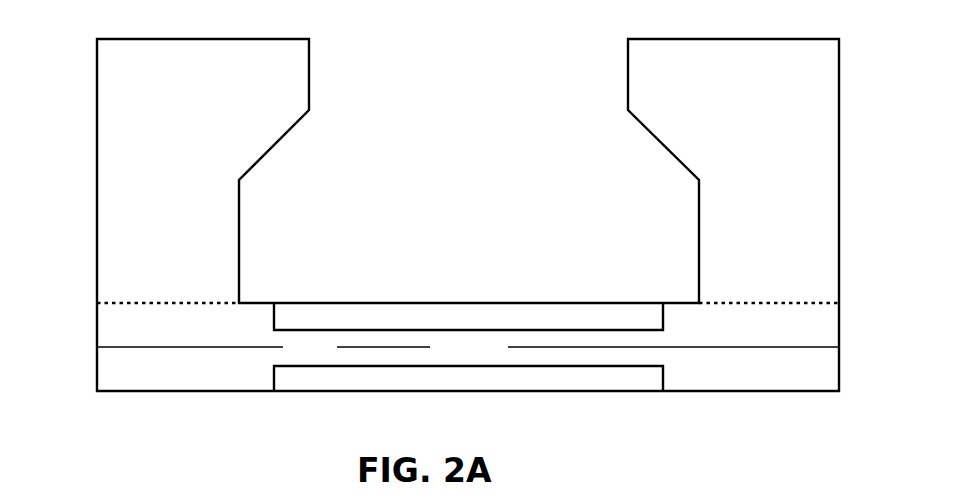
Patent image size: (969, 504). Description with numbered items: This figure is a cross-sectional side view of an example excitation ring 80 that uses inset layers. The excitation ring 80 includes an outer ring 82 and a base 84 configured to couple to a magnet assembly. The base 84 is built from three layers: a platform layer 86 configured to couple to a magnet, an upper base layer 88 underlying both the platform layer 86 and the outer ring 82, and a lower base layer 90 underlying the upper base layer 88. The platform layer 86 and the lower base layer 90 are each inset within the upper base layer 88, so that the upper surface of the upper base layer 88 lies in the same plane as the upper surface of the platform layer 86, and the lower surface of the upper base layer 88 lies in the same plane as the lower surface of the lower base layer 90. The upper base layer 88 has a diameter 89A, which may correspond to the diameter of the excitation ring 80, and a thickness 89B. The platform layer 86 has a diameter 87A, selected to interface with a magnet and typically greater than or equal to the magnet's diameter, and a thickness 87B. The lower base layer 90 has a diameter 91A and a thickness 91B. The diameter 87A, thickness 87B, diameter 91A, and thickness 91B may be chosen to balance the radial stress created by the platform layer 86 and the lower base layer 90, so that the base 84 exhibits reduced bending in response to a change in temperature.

The excitation ring 80 is at (872, 148).
The outer ring 82 is at (748, 67).
The base 84 is at (857, 303).
The platform layer 86 is at (663, 322).
The diameter of platform layer 87A is at (663, 317).
The thickness of platform layer 87B is at (91, 304).
The upper base layer 88 is at (324, 358).
The diameter of upper base layer 89A is at (468, 347).
The thickness of upper base layer 89B is at (91, 330).
The lower base layer 90 is at (664, 386).
The diameter of lower base layer 91A is at (663, 378).
The thickness of lower base layer 91B is at (91, 367).